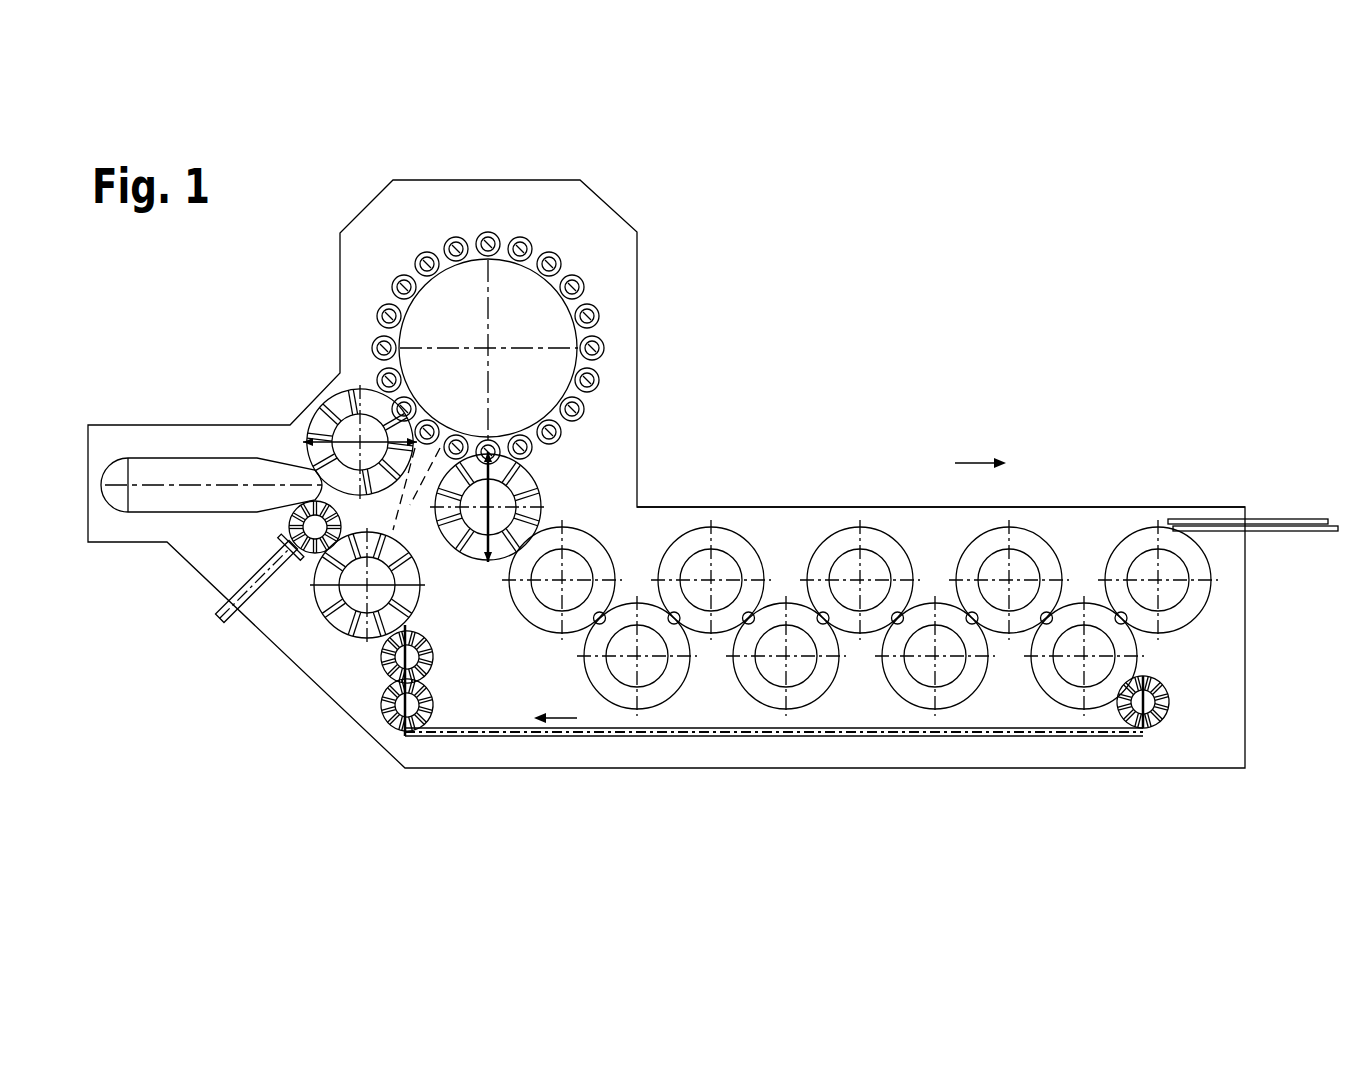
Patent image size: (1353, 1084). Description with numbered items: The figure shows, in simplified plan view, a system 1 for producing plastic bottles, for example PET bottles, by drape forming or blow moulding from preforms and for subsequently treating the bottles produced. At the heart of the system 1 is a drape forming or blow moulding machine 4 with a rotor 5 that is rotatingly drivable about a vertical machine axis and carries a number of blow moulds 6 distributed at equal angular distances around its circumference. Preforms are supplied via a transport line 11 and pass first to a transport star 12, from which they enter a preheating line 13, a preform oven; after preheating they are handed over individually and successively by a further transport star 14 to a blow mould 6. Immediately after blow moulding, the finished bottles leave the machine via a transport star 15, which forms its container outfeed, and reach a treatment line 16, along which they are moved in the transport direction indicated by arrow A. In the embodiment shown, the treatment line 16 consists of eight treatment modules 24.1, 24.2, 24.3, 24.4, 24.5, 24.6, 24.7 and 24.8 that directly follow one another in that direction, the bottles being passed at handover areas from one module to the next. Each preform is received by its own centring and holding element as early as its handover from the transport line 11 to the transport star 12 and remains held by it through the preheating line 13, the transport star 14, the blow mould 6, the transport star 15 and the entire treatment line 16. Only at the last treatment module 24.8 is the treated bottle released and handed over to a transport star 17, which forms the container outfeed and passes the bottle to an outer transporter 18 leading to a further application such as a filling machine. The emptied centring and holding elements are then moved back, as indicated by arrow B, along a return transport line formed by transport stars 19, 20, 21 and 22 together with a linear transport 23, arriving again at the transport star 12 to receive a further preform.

The system 1 is at (880, 224).
The drape forming or blow moulding machine 4 is at (660, 257).
The rotor 5 is at (535, 307).
The blow mould 6 is at (600, 347).
The transport line 11 is at (262, 583).
The transport star 12 is at (238, 587).
The preheating line 13 is at (207, 467).
The transport star 14 is at (343, 412).
The transport star 15 is at (523, 483).
The treatment line 16 is at (824, 503).
The transport star 17 is at (1143, 537).
The outer transporter 18 is at (1270, 520).
The transport star 19 is at (1165, 707).
The transport star 20 is at (433, 705).
The transport star 21 is at (380, 657).
The transport star 22 is at (407, 582).
The linear transport 23 is at (510, 733).
The treatment module 24.1 is at (587, 548).
The treatment module 24.2 is at (620, 695).
The treatment module 24.3 is at (735, 550).
The treatment module 24.4 is at (767, 697).
The treatment module 24.5 is at (880, 538).
The treatment module 24.6 is at (922, 697).
The treatment module 24.7 is at (1028, 547).
The treatment module 24.8 is at (1050, 685).